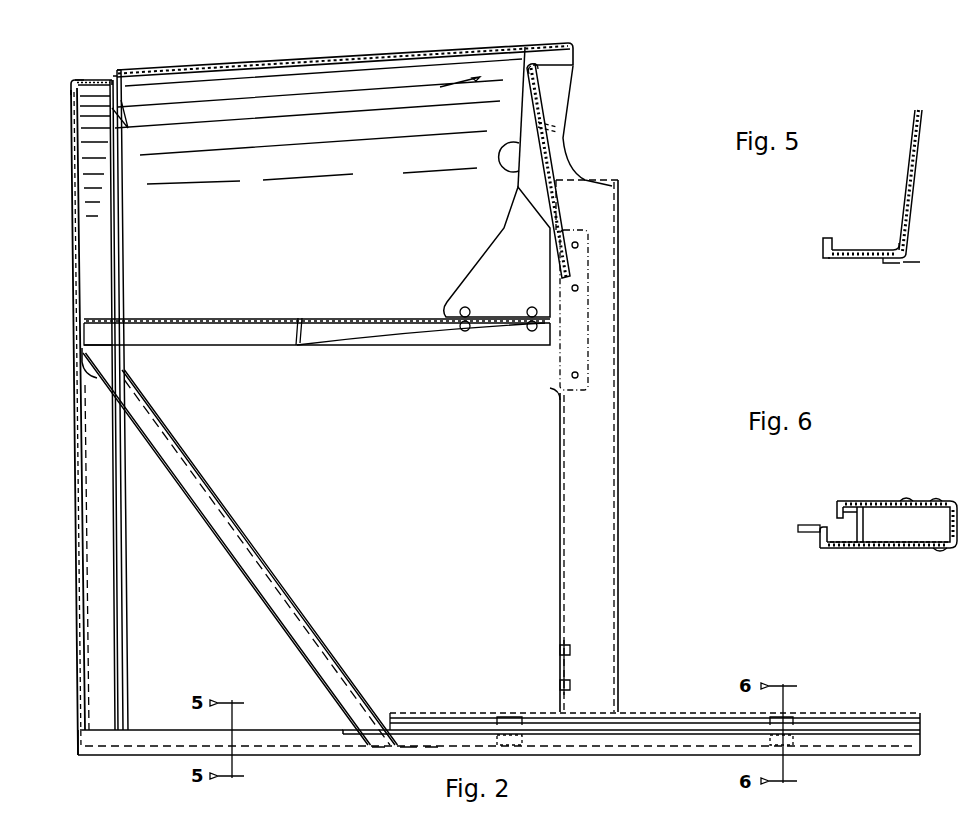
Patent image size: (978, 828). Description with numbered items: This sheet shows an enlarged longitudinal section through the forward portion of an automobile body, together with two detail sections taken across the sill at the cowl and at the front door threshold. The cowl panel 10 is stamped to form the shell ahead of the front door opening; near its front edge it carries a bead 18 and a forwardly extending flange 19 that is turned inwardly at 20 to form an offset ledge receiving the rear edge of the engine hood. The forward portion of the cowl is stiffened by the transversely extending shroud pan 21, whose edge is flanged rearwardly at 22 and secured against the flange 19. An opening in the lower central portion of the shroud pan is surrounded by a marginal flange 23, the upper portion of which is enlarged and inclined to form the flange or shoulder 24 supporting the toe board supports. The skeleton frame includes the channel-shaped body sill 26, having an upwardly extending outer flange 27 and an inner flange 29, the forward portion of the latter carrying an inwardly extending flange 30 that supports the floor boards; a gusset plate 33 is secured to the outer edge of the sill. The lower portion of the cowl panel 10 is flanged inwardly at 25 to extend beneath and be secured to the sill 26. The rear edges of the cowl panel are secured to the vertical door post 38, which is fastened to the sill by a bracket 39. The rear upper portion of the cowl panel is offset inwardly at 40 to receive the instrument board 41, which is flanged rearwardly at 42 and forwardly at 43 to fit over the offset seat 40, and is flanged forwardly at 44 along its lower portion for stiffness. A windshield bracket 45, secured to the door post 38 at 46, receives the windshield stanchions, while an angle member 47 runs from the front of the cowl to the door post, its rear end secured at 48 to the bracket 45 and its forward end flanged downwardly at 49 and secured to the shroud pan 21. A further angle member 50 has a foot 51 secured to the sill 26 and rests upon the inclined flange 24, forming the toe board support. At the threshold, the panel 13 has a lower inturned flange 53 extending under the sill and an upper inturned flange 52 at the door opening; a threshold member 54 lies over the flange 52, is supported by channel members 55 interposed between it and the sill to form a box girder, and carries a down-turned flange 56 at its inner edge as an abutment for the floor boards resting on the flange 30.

In FIG. 2, the cowl panel 10 is at (334, 62).
In FIG. 5, the cowl panel 10 is at (917, 175).
In FIG. 6, the panel below front door opening 13 is at (950, 525).
In FIG. 2, the bead 18 is at (116, 76).
In FIG. 2, the forwardly extending flange 19 is at (92, 79).
In FIG. 2, the inward turn of flange 20 is at (71, 90).
In FIG. 2, the shroud pan 21 is at (74, 185).
In FIG. 2, the rearwardly flanged edge portion 22 is at (128, 128).
In FIG. 2, the marginal flange 23 is at (86, 443).
In FIG. 2, the inclined flange or shoulder 24 is at (86, 383).
In FIG. 2, the inward flange of cowl panel 25 is at (257, 757).
In FIG. 5, the inward flange of cowl panel 25 is at (893, 263).
In FIG. 5, the body sill 26 is at (856, 262).
In FIG. 6, the body sill 26 is at (900, 549).
In FIG. 5, the outer upwardly-extending flange 27 is at (893, 246).
In FIG. 6, the outer upwardly-extending flange 27 is at (940, 540).
In FIG. 5, the inner upwardly-extending flange 29 is at (822, 242).
In FIG. 6, the inner upwardly-extending flange 29 is at (820, 546).
In FIG. 2, the inwardly-extending flange 30 is at (873, 737).
In FIG. 6, the gusset plate 33 is at (798, 528).
In FIG. 2, the vertical frame member (door post) 38 is at (583, 502).
In FIG. 2, the bracket 39 is at (592, 680).
In FIG. 2, the offset seat 40 is at (573, 67).
In FIG. 2, the instrument board 41 is at (550, 157).
In FIG. 2, the rearward flange 42 is at (538, 70).
In FIG. 2, the forward flange 43 is at (568, 45).
In FIG. 2, the forward flange of instrument board 44 is at (537, 210).
In FIG. 2, the windshield bracket 45 is at (522, 198).
In FIG. 2, the securing point 46 is at (578, 375).
In FIG. 2, the angle member 47 is at (345, 320).
In FIG. 2, the securing point 48 is at (532, 310).
In FIG. 2, the downward flange 49 is at (84, 342).
In FIG. 2, the angle member (toe board support) 50 is at (305, 637).
In FIG. 2, the foot 51 is at (432, 745).
In FIG. 2, the upper inturned flange 52 is at (890, 727).
In FIG. 6, the upper inturned flange 52 is at (937, 500).
In FIG. 6, the lower inturned flange 53 is at (940, 554).
In FIG. 6, the threshold member 54 is at (908, 500).
In FIG. 2, the channel member 55 is at (522, 723).
In FIG. 6, the channel member 55 is at (855, 517).
In FIG. 2, the down-turned flange 56 is at (850, 720).
In FIG. 6, the down-turned flange 56 is at (840, 502).